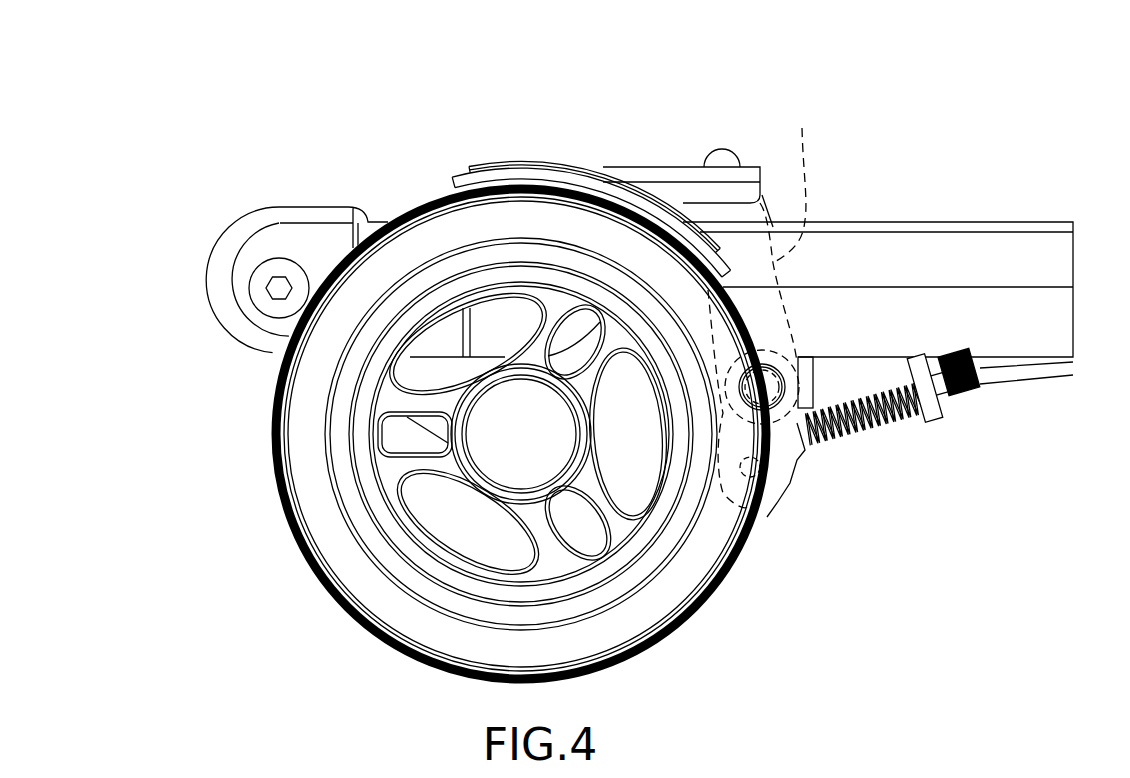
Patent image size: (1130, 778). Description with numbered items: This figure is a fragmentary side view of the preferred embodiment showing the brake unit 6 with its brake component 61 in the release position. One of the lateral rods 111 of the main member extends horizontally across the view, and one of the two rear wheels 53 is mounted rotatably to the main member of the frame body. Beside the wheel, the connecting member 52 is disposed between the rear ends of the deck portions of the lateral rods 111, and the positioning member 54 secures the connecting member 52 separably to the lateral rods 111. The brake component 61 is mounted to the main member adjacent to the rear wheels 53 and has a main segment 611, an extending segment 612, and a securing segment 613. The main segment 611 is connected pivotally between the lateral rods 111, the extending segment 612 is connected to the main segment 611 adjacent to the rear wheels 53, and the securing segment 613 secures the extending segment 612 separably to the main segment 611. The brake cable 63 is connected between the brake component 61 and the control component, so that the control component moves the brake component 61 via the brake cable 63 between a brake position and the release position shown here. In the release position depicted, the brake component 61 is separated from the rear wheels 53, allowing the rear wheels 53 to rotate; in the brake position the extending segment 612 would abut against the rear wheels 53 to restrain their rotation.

The brake unit 6 is at (762, 262).
The brake component 61 is at (562, 162).
The main segment 611 is at (767, 308).
The extending segment 612 is at (497, 165).
The securing segment 613 is at (725, 155).
The lateral rods 111 is at (928, 245).
The connecting member 52 is at (240, 228).
The rear wheels 53 is at (305, 495).
The positioning member 54 is at (255, 289).
The brake cable 63 is at (1028, 372).